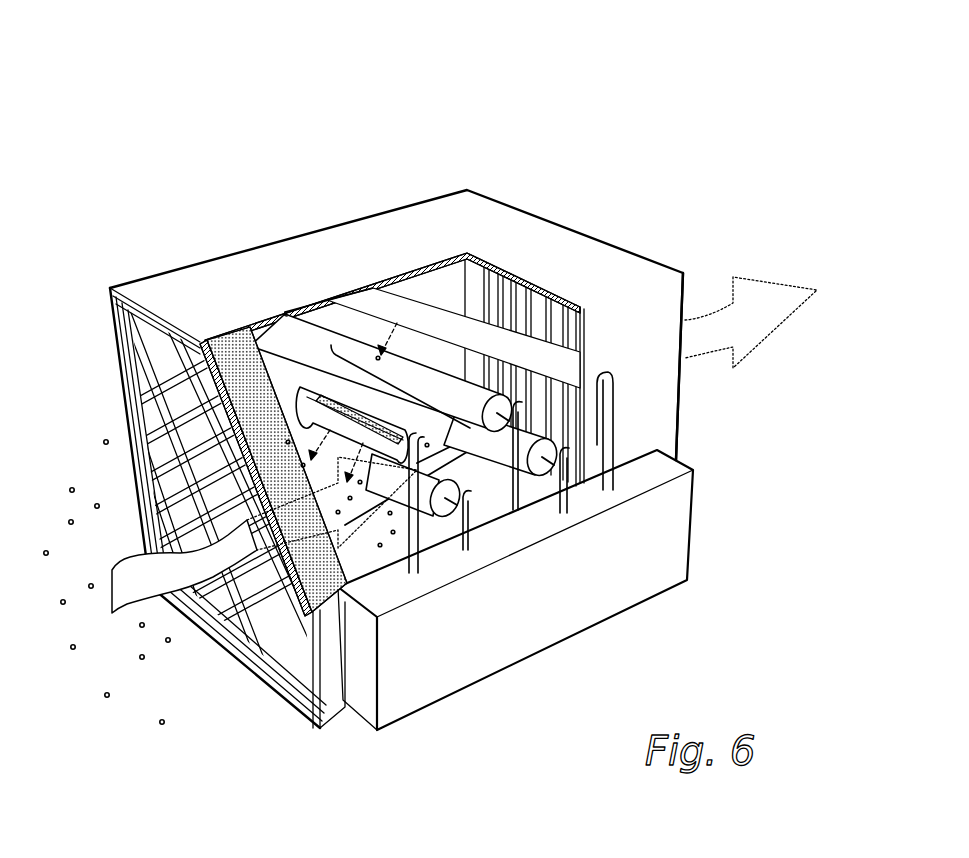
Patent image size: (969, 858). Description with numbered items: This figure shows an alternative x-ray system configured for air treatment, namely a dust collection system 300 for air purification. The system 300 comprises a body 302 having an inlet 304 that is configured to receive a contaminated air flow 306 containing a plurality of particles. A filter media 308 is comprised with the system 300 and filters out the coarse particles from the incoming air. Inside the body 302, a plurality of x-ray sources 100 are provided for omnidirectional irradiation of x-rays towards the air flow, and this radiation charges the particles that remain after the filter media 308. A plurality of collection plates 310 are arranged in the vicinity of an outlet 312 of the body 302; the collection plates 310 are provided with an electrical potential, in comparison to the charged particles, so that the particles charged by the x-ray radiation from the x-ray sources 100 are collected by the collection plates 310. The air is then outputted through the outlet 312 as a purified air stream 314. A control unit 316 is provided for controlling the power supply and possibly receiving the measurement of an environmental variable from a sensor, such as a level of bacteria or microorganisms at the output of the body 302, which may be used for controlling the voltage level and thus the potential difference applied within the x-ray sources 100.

The dust collection system 300 is at (435, 421).
The body 302 is at (292, 262).
The inlet 304 is at (229, 676).
The contaminated air flow 306 is at (128, 597).
The filter media 308 is at (320, 572).
The collection plates 310 is at (537, 307).
The outlet 312 is at (688, 293).
The purified air stream 314 is at (768, 317).
The control unit 316 is at (668, 545).
The x-ray sources 100 is at (427, 490).